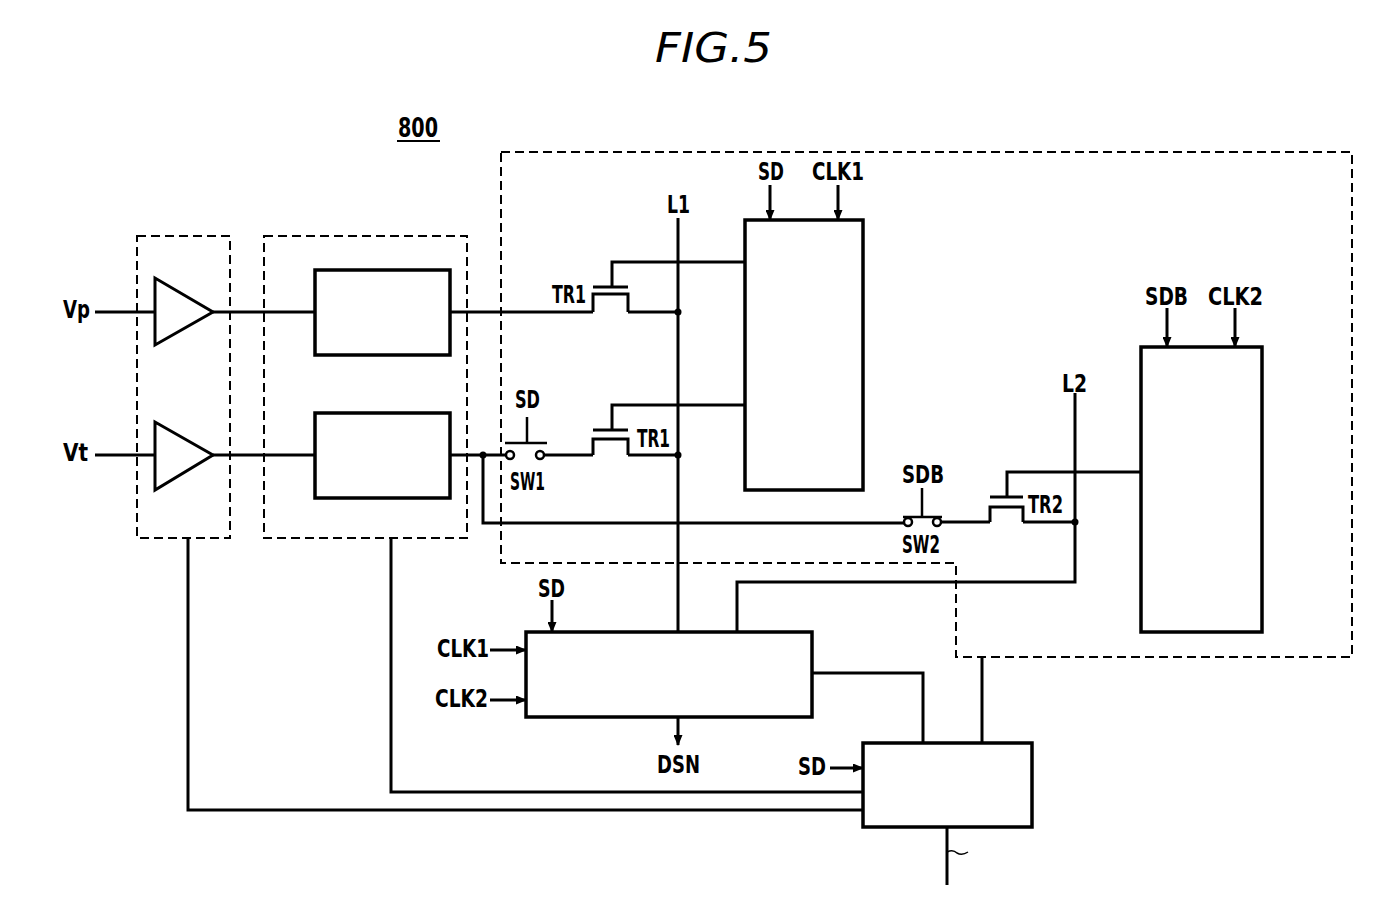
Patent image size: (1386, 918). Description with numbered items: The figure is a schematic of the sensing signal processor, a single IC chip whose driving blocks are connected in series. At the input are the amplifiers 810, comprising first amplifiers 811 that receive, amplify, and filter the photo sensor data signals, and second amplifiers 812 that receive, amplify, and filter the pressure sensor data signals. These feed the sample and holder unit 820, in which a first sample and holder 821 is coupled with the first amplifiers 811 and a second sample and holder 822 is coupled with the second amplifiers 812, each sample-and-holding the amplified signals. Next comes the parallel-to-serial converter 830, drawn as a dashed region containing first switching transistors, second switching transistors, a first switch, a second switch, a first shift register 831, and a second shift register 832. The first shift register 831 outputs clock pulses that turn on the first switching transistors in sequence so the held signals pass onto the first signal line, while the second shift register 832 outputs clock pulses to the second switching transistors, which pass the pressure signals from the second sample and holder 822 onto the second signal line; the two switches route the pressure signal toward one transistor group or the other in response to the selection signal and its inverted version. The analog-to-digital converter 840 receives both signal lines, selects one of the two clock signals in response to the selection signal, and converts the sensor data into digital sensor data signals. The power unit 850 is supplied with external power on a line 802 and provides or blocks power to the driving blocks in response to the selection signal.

The amplifiers 810 is at (190, 236).
The first amplifiers 811 is at (175, 333).
The second amplifiers 812 is at (175, 476).
The sample and holder unit 820 is at (376, 236).
The first sample and holder 821 is at (315, 347).
The second sample and holder 822 is at (315, 490).
The parallel-to-serial converter 830 is at (1091, 152).
The first shift register 831 is at (863, 267).
The second shift register 832 is at (1262, 430).
The analog-to-digital converter 840 is at (812, 650).
The power unit 850 is at (1032, 788).
The line 802 is at (947, 870).